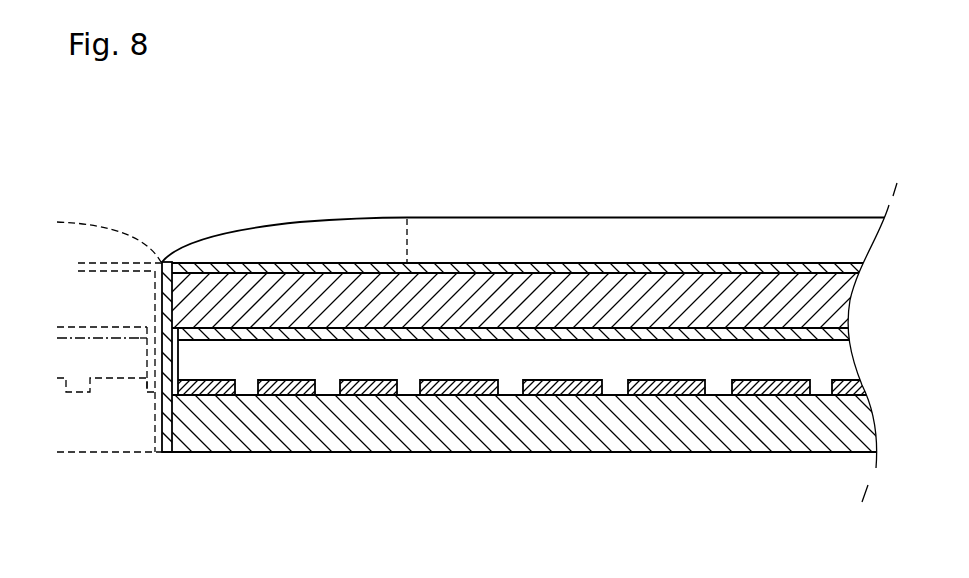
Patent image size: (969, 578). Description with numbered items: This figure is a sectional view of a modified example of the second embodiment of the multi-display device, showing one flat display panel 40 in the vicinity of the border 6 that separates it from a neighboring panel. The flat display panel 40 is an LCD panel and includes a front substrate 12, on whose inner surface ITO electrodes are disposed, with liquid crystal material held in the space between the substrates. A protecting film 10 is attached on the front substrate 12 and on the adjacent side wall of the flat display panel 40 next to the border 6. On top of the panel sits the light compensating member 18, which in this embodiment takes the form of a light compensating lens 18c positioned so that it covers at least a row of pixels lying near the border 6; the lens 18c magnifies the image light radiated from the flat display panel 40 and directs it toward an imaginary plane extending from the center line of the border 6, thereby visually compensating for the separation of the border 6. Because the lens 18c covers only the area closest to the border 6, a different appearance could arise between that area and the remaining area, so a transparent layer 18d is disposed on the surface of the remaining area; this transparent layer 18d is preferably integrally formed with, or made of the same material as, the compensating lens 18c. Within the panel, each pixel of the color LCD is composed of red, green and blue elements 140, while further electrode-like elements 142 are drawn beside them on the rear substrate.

The border 6 is at (167, 458).
The protecting film 10 is at (537, 264).
The front substrate 12 is at (660, 295).
The light compensating member 18 is at (470, 156).
The light compensating lens 18c is at (298, 237).
The transparent layer 18d is at (448, 228).
The flat display panel 40 is at (778, 215).
The red, green and blue elements 140 is at (203, 386).
The second electrodes 142 is at (476, 386).